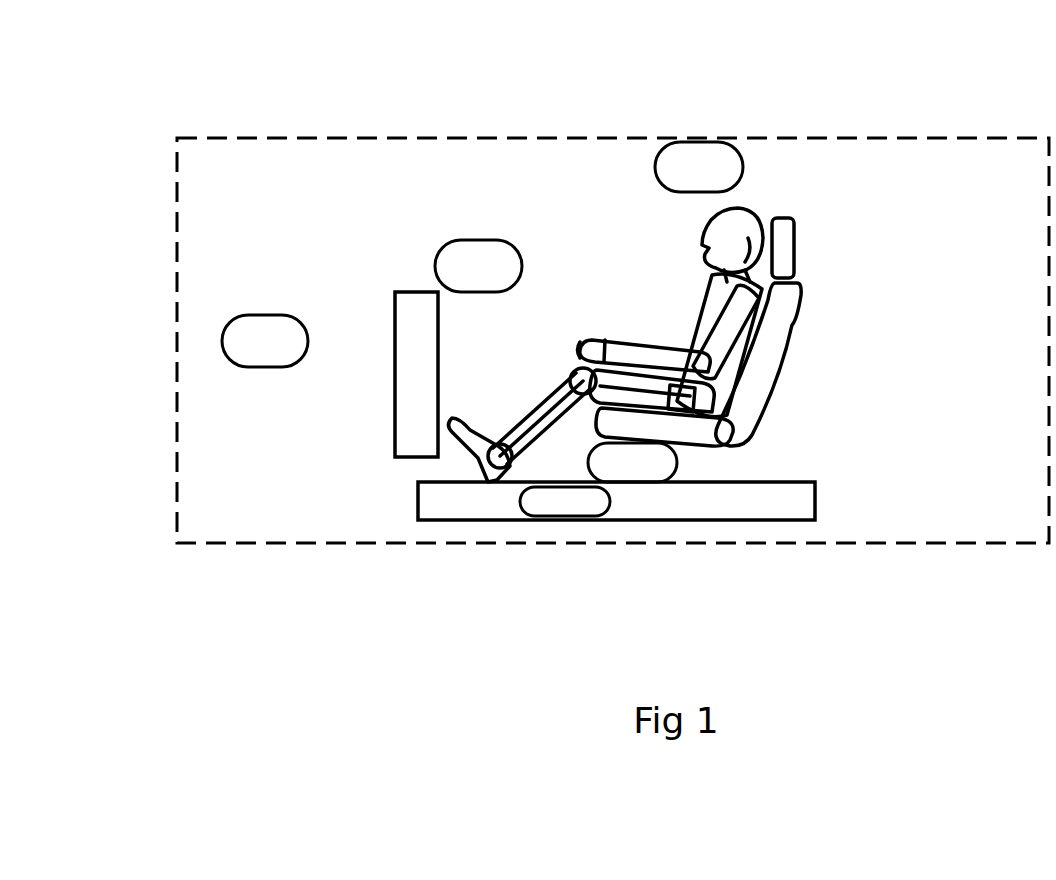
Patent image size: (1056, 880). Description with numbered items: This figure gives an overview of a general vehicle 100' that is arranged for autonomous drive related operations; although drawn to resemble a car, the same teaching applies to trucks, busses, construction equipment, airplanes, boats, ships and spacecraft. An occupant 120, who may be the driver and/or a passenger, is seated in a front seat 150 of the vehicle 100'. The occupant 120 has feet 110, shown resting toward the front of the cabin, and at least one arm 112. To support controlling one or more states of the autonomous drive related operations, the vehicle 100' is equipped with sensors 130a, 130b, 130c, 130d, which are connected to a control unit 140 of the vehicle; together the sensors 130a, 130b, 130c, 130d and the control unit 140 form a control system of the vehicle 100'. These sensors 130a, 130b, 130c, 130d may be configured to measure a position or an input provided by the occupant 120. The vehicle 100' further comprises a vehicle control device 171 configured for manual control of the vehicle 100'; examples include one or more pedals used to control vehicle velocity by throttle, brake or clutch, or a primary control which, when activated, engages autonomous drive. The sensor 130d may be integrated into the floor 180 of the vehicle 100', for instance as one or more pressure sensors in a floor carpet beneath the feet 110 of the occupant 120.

The vehicle 100' is at (613, 291).
The feet 110 is at (500, 427).
The arm 112 is at (650, 332).
The occupant 120 is at (660, 222).
The sensor 130a is at (632, 462).
The sensor 130b is at (478, 266).
The sensor 130c is at (699, 167).
The sensor 130d is at (565, 501).
The control unit 140 is at (265, 341).
The front seat 150 is at (817, 278).
The vehicle control device 171 is at (378, 432).
The floor 180 is at (462, 518).